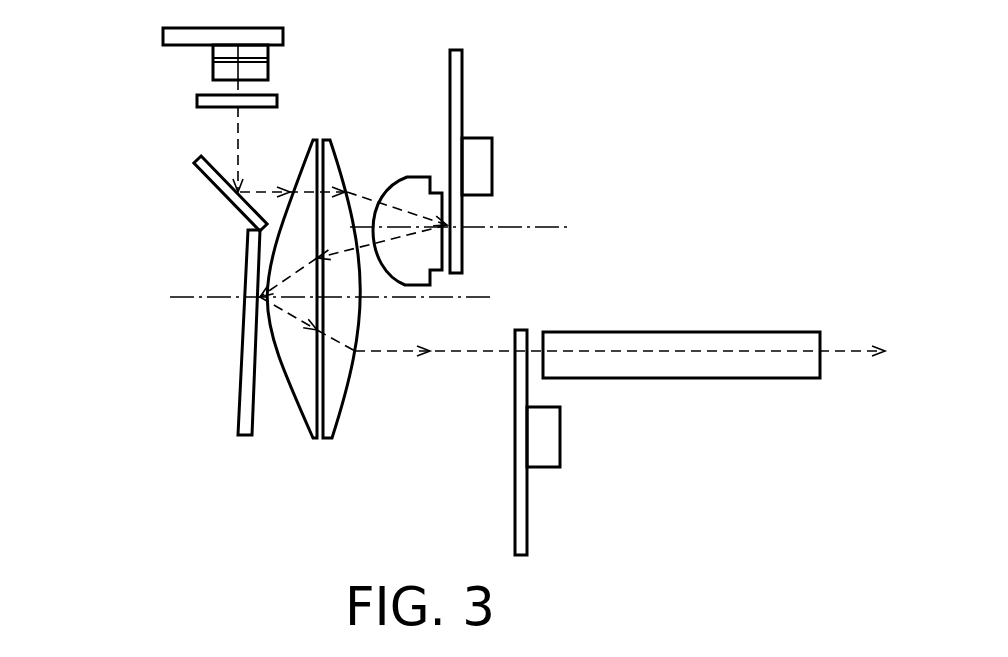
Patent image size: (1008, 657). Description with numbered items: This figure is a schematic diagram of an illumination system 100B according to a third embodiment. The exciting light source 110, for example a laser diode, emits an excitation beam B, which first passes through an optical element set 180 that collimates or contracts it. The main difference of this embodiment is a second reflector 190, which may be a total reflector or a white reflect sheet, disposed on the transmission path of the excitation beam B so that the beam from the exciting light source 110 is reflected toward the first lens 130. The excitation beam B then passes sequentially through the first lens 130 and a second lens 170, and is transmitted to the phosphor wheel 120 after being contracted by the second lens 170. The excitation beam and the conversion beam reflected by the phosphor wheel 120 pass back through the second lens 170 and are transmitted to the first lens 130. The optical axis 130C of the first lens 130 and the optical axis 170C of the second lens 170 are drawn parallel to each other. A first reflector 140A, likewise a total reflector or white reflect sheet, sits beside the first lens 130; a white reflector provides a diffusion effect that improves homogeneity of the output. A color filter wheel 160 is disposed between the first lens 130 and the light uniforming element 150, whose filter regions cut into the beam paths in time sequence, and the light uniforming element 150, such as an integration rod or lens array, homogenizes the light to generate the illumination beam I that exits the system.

The illumination system 100B is at (115, 59).
The exciting light source 110 is at (283, 36).
The optical element set 180 is at (277, 100).
The second reflector 190 is at (203, 163).
The first reflector 140A is at (247, 413).
The first lens 130 is at (315, 440).
The second lens 170 is at (407, 176).
The phosphor wheel 120 is at (462, 87).
The optical axis of the second lens 170C is at (552, 224).
The optical axis of the first lens 130C is at (480, 295).
The color filter wheel 160 is at (515, 500).
The light uniforming element 150 is at (685, 332).
The illumination beam I is at (848, 350).
The excitation beam B is at (368, 197).